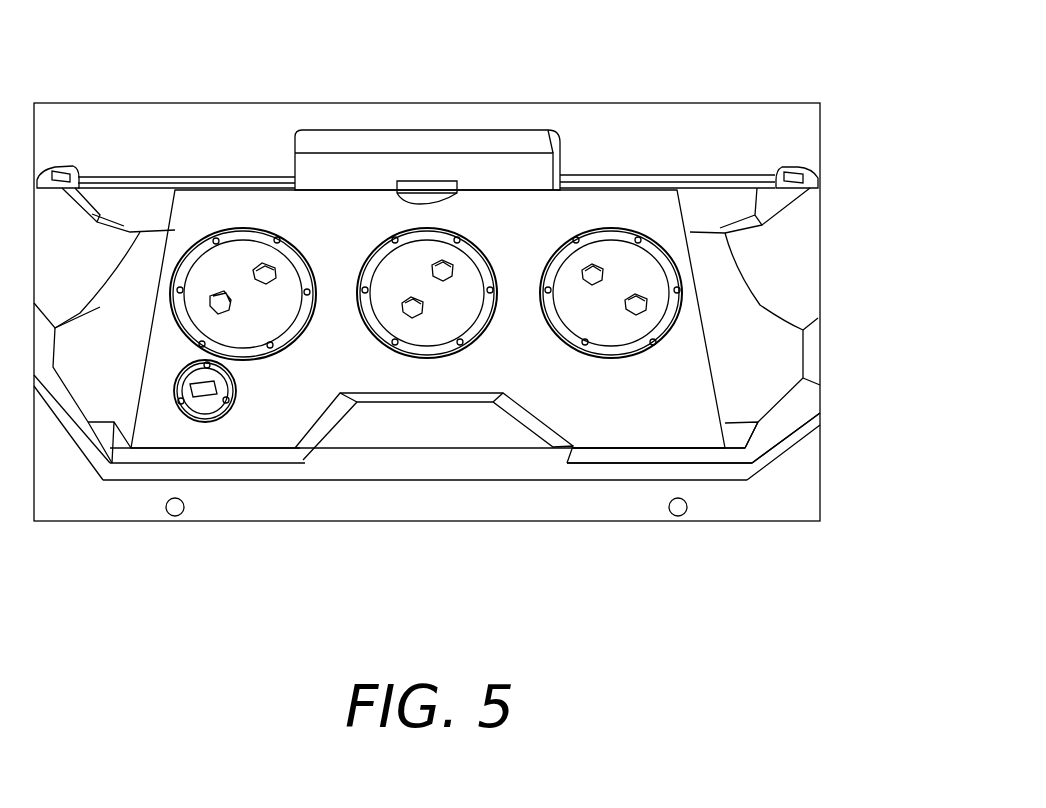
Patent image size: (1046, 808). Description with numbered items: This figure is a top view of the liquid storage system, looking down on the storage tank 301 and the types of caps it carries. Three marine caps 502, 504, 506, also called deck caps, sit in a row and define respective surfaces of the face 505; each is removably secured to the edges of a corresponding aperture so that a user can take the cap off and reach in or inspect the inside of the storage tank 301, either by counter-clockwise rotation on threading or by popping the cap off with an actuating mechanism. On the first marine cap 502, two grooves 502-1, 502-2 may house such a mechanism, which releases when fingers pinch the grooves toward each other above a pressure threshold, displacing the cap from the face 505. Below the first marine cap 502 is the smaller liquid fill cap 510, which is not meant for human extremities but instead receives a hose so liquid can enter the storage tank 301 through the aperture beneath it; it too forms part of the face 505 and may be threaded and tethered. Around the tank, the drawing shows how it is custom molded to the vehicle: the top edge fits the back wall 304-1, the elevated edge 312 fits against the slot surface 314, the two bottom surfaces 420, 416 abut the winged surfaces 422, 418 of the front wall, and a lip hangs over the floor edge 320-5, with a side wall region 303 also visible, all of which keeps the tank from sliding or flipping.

The storage tank 301 is at (640, 212).
The side wall 303 is at (768, 337).
The back wall 304-1 is at (145, 157).
The elevated edge 312 is at (417, 393).
The slot surface 314 is at (467, 433).
The edge of the actual floor 320-5 is at (85, 393).
The bottom surface 416 is at (687, 452).
The winged surface 418 is at (637, 470).
The bottom surface 420 is at (230, 448).
The winged surface 422 is at (182, 470).
The marine cap 502 is at (194, 195).
The groove 502-1 is at (215, 295).
The groove 502-2 is at (263, 265).
The marine cap 504 is at (393, 315).
The face 505 is at (333, 327).
The marine cap 506 is at (588, 317).
The liquid fill cap 510 is at (187, 407).